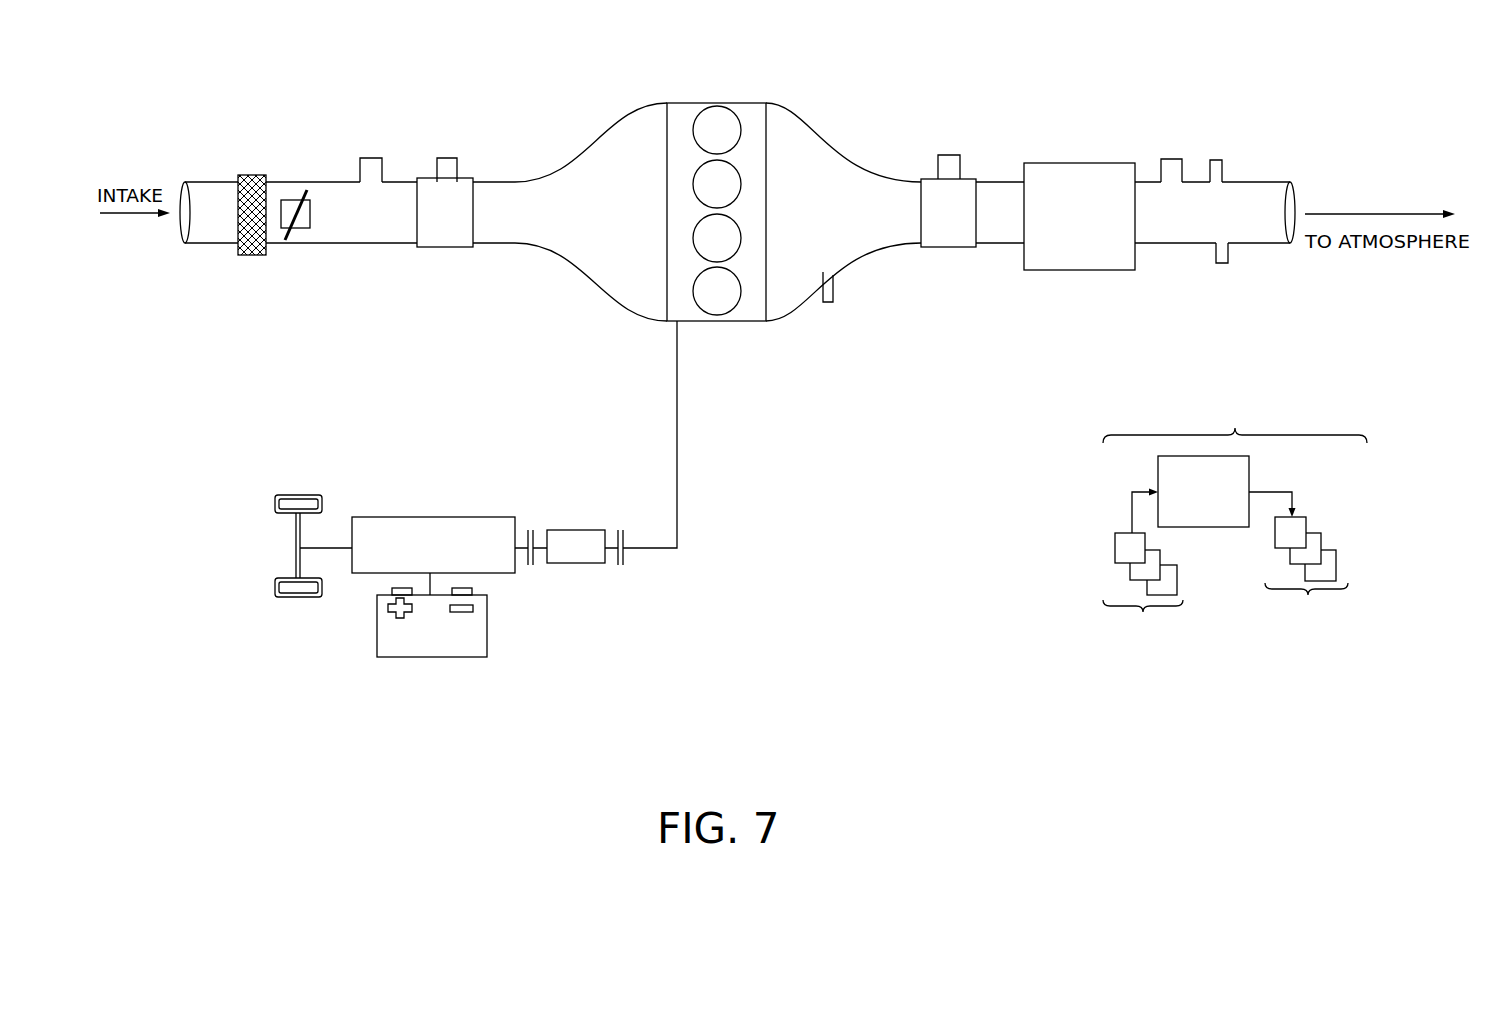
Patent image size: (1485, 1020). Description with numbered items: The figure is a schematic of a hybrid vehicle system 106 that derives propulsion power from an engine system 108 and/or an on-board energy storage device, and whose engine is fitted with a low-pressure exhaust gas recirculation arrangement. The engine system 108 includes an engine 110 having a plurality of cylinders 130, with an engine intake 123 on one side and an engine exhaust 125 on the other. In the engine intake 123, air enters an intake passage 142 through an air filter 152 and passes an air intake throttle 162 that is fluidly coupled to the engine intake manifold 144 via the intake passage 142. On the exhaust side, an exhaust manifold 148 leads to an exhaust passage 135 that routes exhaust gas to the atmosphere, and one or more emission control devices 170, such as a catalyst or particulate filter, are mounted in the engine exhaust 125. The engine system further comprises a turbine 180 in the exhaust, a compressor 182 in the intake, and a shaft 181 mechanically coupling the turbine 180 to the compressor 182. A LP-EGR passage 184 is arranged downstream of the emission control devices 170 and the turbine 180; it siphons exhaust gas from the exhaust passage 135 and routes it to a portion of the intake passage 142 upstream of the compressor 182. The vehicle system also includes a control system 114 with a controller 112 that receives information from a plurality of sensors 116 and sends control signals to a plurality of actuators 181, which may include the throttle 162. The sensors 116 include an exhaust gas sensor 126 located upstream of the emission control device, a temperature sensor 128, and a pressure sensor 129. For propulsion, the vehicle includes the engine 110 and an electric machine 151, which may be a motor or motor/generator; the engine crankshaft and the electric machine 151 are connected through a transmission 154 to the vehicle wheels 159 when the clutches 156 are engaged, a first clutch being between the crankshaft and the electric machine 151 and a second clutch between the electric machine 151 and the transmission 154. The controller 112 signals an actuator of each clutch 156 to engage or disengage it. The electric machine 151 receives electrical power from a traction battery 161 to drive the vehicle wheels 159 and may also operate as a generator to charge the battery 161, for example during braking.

The hybrid vehicle system 106 is at (205, 83).
The engine system 108 is at (1325, 75).
The engine 110 is at (767, 192).
The controller 112 is at (1203, 491).
The control system 114 is at (1235, 519).
The sensors 116 is at (1143, 595).
The engine intake 123 is at (590, 133).
The engine exhaust 125 is at (880, 142).
The exhaust gas sensor 126 is at (831, 281).
The temperature sensor 128 is at (1222, 263).
The pressure sensor 129 is at (1216, 161).
The cylinders 130 is at (741, 122).
The exhaust passage 135 is at (1270, 182).
The intake passage 142 is at (215, 243).
The engine intake manifold 144 is at (608, 224).
The exhaust manifold 148 is at (831, 224).
The electric machine 151 is at (580, 566).
The air filter 152 is at (252, 176).
The transmission 154 is at (378, 573).
The clutches 156 is at (535, 531).
The vehicle wheels 159 is at (298, 597).
The traction battery 161 is at (437, 657).
The air intake throttle 162 is at (310, 227).
The emission control devices 170 is at (1066, 165).
The turbine 180 is at (934, 224).
The shaft 181 is at (452, 158).
The compressor 182 is at (431, 224).
The LP-EGR passage 184 is at (372, 158).